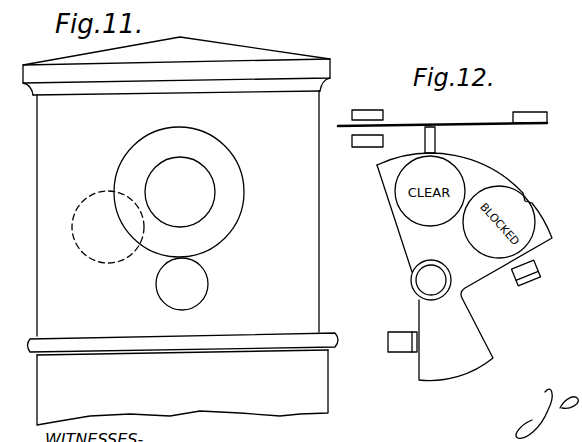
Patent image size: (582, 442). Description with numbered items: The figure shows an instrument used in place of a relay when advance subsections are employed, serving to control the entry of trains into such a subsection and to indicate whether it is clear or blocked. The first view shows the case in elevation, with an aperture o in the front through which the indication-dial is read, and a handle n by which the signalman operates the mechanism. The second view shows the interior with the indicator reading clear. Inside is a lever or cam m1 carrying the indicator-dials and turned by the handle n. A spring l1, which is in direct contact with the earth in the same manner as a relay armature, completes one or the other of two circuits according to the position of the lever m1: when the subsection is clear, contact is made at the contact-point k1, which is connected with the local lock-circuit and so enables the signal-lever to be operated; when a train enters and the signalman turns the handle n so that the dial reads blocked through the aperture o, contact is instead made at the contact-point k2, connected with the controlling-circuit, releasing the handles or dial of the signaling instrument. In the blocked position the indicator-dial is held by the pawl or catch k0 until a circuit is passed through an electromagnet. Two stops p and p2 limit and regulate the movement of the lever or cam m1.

In FIG. 11, the aperture o is at (180, 192).
In FIG. 11, the handle n is at (182, 284).
In FIG. 12, the spring l1 is at (442, 115).
In FIG. 12, the contact-point k1 is at (368, 128).
In FIG. 12, the contact-point k2 is at (368, 128).
In FIG. 12, the pawl or catch k0 is at (435, 142).
In FIG. 12, the lever or cam m1 is at (431, 267).
In FIG. 12, the stop p2 is at (536, 273).
In FIG. 12, the stop p is at (405, 347).